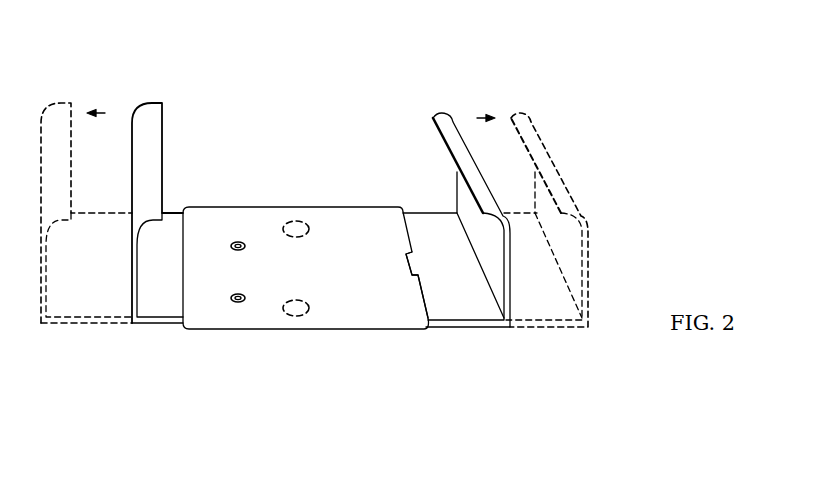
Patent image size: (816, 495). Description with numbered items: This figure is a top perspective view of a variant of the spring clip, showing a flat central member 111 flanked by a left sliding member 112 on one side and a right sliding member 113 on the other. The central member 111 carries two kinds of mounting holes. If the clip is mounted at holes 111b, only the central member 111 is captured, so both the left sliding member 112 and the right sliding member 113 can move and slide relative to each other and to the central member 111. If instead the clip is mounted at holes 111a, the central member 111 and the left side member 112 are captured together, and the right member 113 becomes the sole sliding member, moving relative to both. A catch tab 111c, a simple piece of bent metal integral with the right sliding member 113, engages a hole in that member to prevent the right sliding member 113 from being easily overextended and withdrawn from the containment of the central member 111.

The central member 111 is at (279, 275).
The holes 111a is at (238, 242).
The holes 111b is at (310, 209).
The catch tab 111c is at (233, 302).
The left sliding member 112 is at (150, 101).
The right sliding member 113 is at (443, 128).